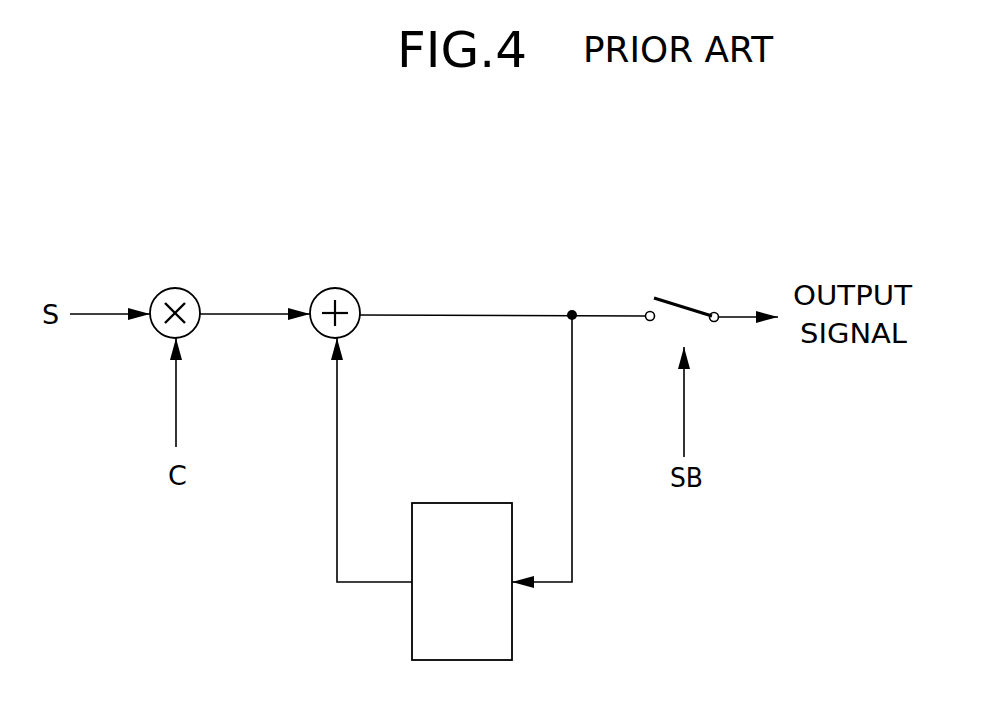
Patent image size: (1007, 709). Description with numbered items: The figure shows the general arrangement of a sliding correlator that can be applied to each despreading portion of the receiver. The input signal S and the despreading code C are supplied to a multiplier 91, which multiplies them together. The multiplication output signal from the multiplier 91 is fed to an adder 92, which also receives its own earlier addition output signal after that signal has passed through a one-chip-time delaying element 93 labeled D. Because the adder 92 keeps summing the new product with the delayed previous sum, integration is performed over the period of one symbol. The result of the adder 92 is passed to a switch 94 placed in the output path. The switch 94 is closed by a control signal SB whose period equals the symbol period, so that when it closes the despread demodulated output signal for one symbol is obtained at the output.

The multiplier 91 is at (175, 295).
The adder 92 is at (335, 295).
The one-chip-time delaying element 93 is at (462, 564).
The switch 94 is at (682, 297).